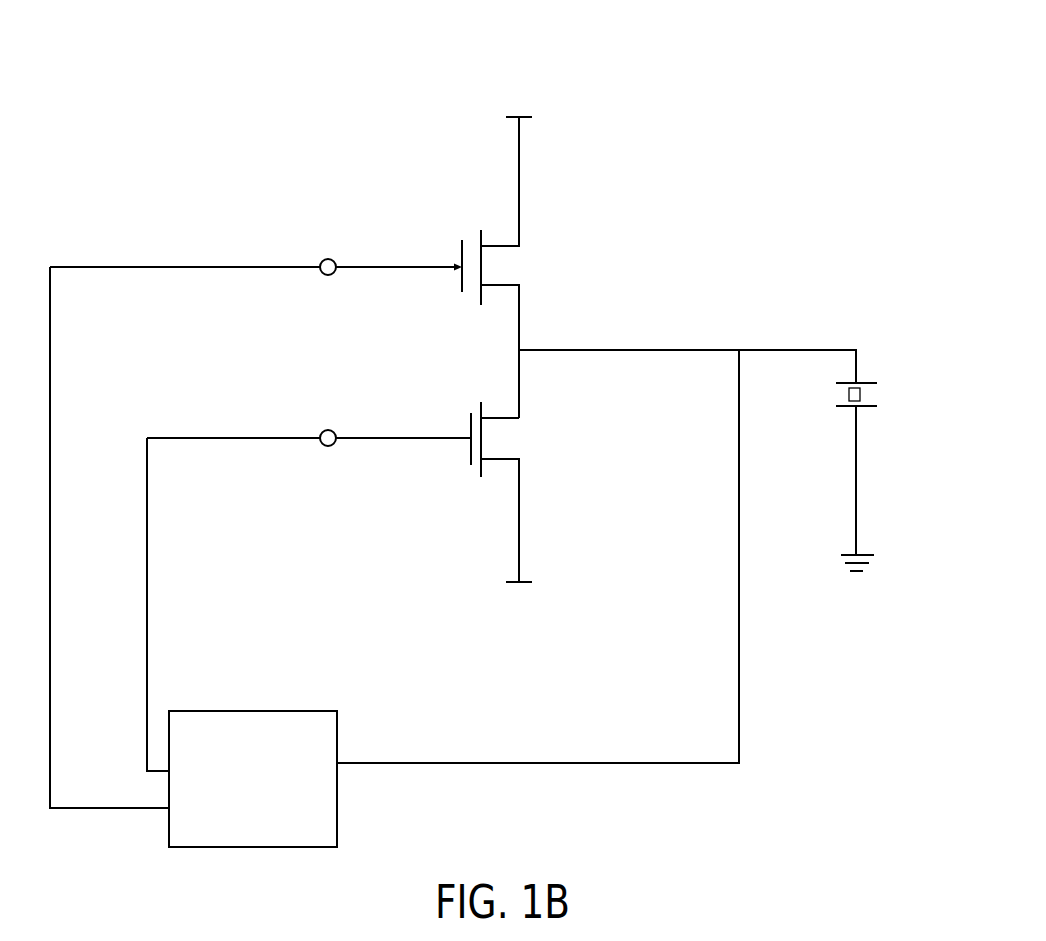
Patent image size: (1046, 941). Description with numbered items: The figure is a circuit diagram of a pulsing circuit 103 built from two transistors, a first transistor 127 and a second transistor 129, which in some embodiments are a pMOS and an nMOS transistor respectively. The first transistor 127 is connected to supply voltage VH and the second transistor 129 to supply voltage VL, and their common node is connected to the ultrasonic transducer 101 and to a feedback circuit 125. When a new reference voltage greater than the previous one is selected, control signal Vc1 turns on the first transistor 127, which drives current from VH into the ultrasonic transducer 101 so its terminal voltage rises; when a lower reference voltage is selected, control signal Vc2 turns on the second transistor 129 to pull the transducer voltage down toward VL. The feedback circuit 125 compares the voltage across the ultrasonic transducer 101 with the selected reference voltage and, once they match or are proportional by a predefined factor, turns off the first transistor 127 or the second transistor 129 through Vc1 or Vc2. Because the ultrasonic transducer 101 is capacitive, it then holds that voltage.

The pulsing circuit 103 is at (102, 124).
The first transistor 127 is at (512, 267).
The second transistor 129 is at (512, 436).
The feedback circuit 125 is at (340, 732).
The ultrasonic transducer 101 is at (878, 395).